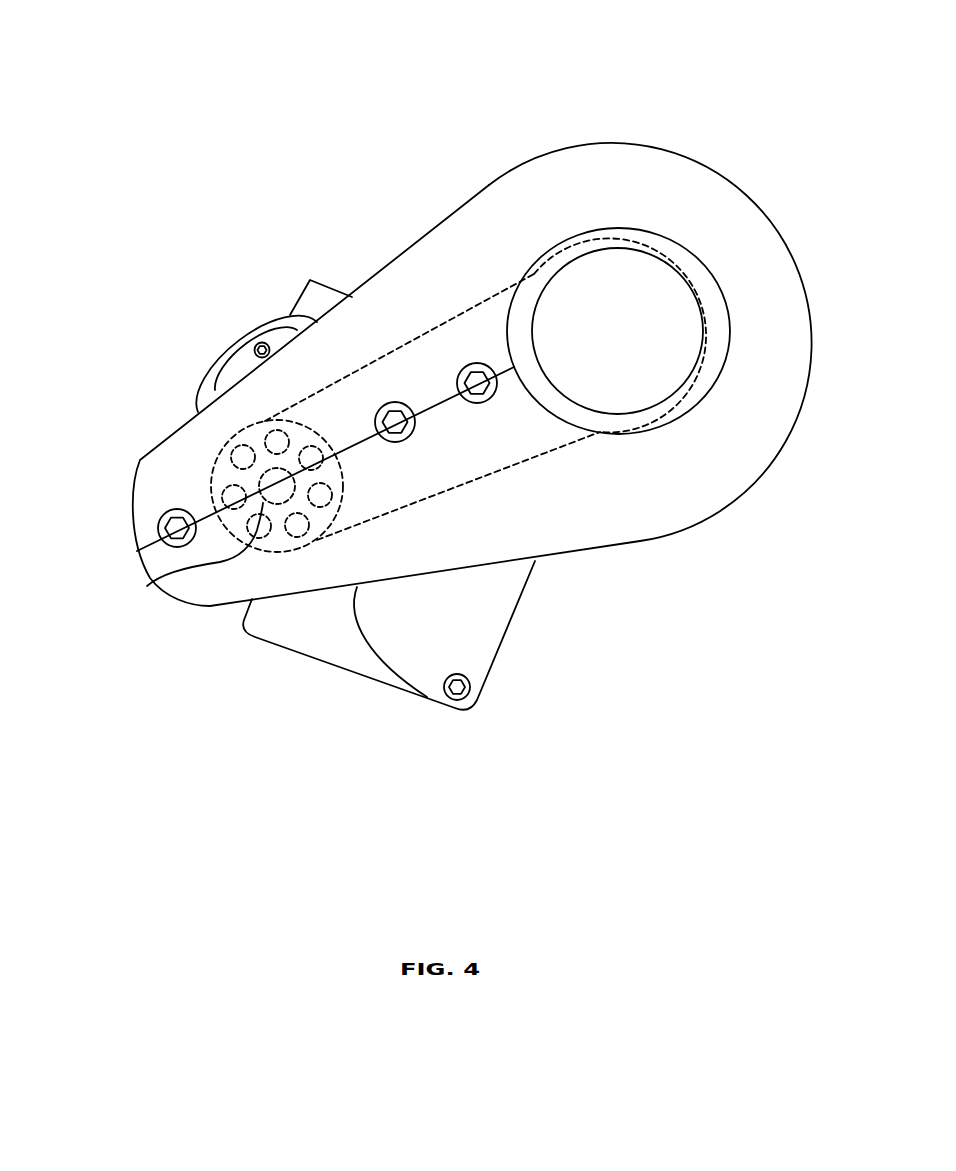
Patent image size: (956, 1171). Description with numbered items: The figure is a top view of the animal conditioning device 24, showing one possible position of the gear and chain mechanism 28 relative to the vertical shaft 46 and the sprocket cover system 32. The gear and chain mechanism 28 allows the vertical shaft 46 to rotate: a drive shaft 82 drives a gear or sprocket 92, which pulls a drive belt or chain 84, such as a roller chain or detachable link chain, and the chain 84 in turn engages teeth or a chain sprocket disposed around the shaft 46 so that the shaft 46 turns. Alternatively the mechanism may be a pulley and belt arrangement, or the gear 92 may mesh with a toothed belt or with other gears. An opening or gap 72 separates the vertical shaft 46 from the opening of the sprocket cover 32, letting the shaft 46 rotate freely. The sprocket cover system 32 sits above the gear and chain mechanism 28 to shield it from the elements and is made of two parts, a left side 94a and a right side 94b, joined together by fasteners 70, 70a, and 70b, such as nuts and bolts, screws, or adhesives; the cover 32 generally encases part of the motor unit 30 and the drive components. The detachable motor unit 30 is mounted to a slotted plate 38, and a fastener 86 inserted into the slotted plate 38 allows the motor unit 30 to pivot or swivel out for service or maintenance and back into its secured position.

The animal conditioning device 24 is at (222, 68).
The left side 94a is at (493, 162).
The right side 94b is at (817, 483).
The opening or gap 72 is at (700, 270).
The vertical shaft 46 is at (702, 331).
The drive belt or chain 84 is at (587, 437).
The gear and chain mechanism 28 is at (257, 562).
The gear or sprocket 92 is at (338, 506).
The drive shaft 82 is at (147, 586).
The sprocket cover system 32 is at (141, 562).
The fastener 70 is at (160, 512).
The fastener 70a is at (396, 402).
The fastener 70b is at (474, 363).
The fastener 86 is at (258, 344).
The motor unit 30 is at (310, 280).
The plate 38 is at (316, 658).